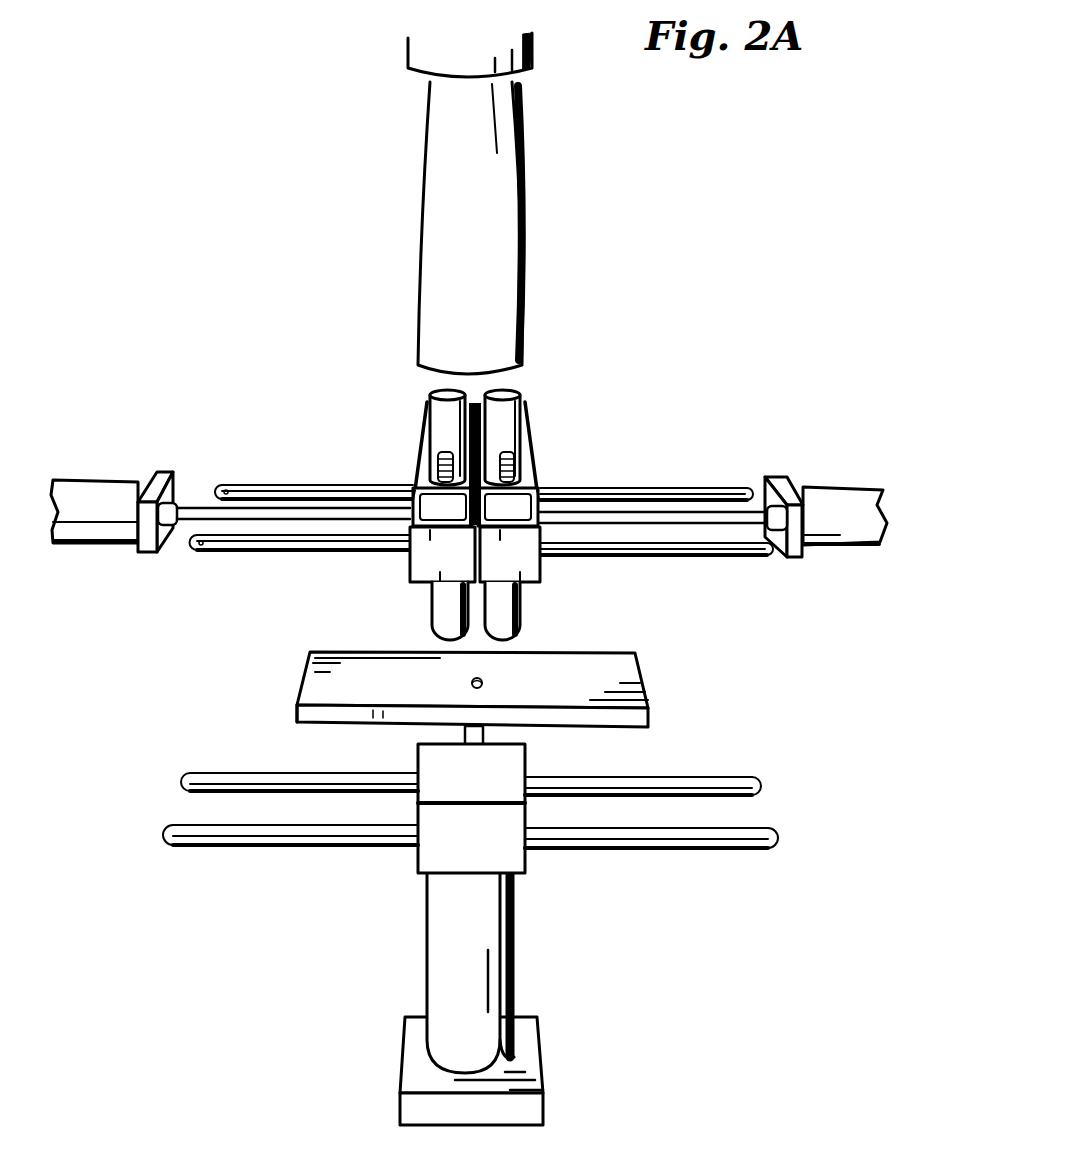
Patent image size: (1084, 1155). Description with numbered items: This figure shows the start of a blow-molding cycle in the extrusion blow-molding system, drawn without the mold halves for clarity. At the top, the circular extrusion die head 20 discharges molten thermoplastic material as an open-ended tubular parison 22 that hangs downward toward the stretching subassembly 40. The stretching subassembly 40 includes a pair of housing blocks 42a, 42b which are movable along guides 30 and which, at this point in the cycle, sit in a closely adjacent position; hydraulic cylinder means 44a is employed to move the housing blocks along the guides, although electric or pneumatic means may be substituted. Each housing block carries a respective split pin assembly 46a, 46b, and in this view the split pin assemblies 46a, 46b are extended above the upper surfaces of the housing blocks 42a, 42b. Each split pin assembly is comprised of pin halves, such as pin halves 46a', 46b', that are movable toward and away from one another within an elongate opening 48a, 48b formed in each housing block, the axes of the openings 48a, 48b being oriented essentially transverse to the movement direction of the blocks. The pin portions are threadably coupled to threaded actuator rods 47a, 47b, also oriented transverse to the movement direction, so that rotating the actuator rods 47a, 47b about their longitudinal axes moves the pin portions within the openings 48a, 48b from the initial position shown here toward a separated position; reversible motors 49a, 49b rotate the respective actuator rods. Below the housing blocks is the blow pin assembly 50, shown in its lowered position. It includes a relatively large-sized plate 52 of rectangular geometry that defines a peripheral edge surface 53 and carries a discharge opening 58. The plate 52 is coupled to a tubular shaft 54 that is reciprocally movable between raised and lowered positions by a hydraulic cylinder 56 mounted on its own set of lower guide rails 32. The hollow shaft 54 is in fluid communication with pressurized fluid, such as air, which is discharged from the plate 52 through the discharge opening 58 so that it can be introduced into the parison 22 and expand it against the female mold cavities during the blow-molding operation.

The extrusion die head 20 is at (452, 62).
The tubular parison 22 is at (452, 234).
The guides 30 is at (228, 540).
The lower guide rails 32 is at (243, 793).
The clamp assembly 40 is at (630, 419).
The housing block 42a is at (423, 567).
The housing block 42b is at (823, 524).
The hydraulic cylinder means 44a is at (80, 515).
The split pin assembly 46a is at (410, 437).
The split pin assembly 46b is at (543, 437).
The pin half 46a' is at (380, 400).
The pin half 46b' is at (569, 400).
The actuator rod 47a is at (402, 464).
The actuator rod 47b is at (559, 464).
The elongate opening 48a is at (412, 498).
The elongate opening 48b is at (540, 505).
The reversible motor 49a is at (432, 600).
The reversible motor 49b is at (520, 617).
The blow pin assembly 50 is at (425, 705).
The plate 52 is at (367, 692).
The peripheral edge surface 53 is at (323, 717).
The tubular shaft 54 is at (483, 733).
The hydraulic cylinder 56 is at (452, 950).
The discharge opening 58 is at (482, 680).